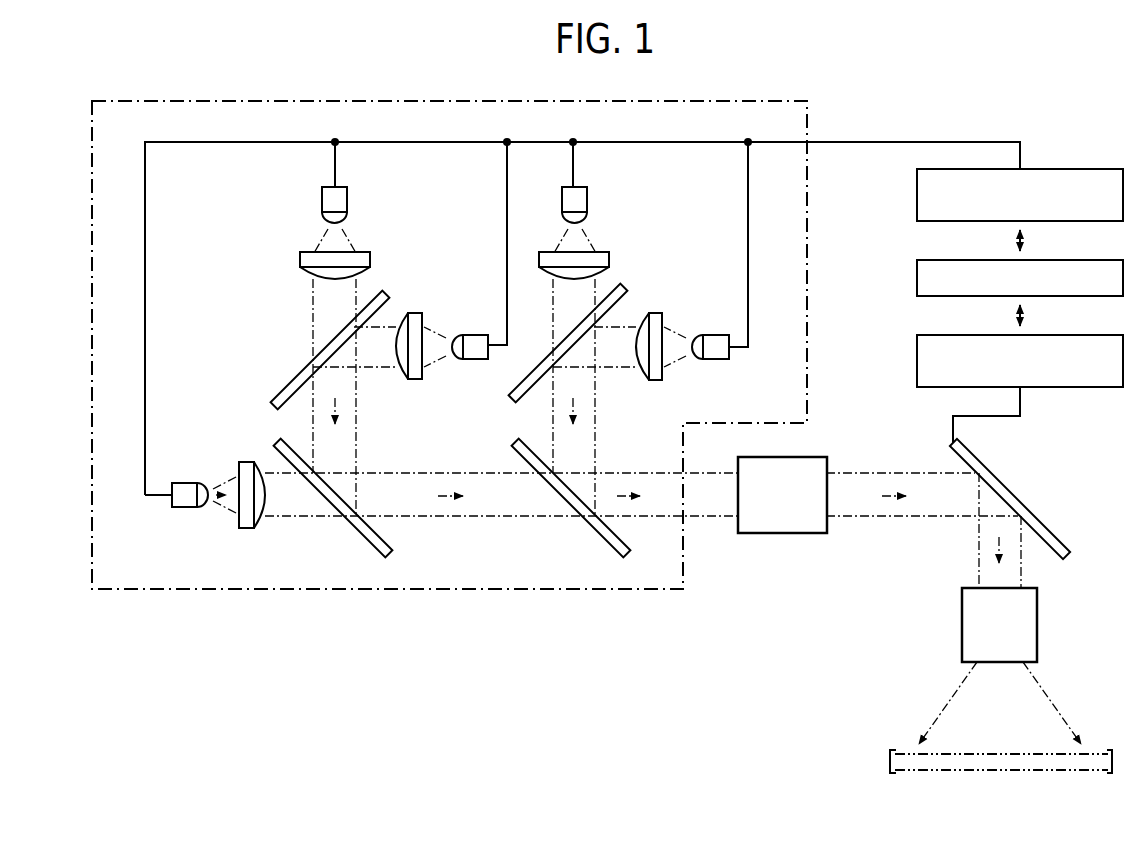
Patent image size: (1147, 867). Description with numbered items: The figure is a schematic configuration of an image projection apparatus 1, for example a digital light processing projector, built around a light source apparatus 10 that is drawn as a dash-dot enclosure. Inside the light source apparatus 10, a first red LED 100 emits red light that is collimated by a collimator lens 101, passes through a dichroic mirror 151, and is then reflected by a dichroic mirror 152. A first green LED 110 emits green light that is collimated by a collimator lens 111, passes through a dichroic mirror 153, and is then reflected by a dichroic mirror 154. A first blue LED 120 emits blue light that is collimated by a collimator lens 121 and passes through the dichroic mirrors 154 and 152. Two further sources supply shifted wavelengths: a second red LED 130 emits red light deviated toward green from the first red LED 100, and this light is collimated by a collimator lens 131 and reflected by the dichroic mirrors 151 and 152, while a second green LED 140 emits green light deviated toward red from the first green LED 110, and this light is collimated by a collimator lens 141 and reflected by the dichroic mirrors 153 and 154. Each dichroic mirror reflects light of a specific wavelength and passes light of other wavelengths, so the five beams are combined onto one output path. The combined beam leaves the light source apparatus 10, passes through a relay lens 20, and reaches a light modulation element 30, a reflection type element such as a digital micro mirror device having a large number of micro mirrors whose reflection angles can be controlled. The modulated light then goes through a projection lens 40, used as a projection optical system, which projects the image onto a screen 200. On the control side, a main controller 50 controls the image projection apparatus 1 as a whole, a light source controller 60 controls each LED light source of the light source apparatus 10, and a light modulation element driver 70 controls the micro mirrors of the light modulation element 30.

The image projection apparatus 1 is at (470, 638).
The light source apparatus 10 is at (420, 593).
The relay lens 20 is at (782, 535).
The light modulation element 30 is at (1046, 527).
The projection lens 40 is at (1038, 624).
The main controller 50 is at (917, 278).
The light source controller 60 is at (917, 190).
The light modulation element driver 70 is at (917, 361).
The first red LED 100 is at (590, 198).
The collimator lens 101 is at (596, 252).
The first green LED 110 is at (350, 198).
The collimator lens 111 is at (356, 252).
The first blue LED 120 is at (183, 508).
The collimator lens 121 is at (245, 530).
The second red LED 130 is at (718, 360).
The collimator lens 131 is at (655, 382).
The second green LED 140 is at (471, 360).
The collimator lens 141 is at (415, 381).
The dichroic mirror 151 is at (548, 358).
The dichroic mirror 152 is at (597, 534).
The dichroic mirror 153 is at (294, 378).
The dichroic mirror 154 is at (358, 532).
The screen 200 is at (889, 761).